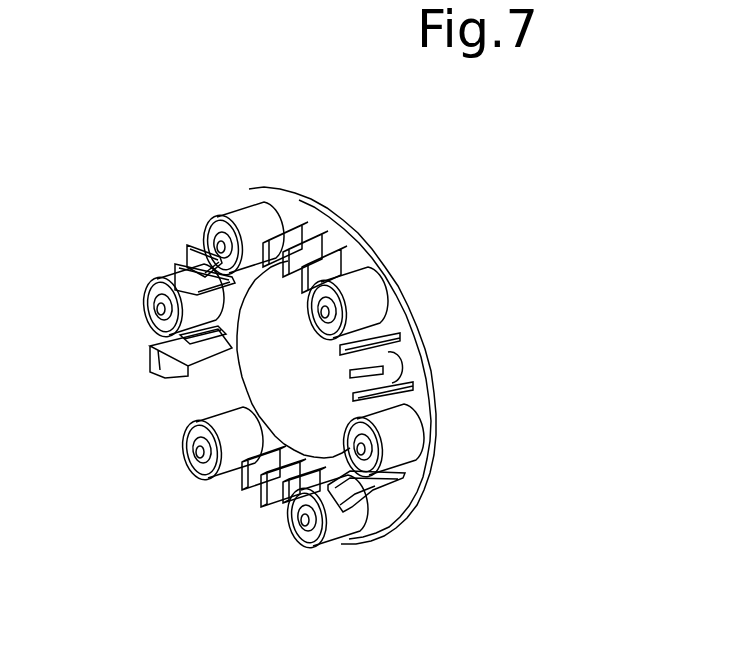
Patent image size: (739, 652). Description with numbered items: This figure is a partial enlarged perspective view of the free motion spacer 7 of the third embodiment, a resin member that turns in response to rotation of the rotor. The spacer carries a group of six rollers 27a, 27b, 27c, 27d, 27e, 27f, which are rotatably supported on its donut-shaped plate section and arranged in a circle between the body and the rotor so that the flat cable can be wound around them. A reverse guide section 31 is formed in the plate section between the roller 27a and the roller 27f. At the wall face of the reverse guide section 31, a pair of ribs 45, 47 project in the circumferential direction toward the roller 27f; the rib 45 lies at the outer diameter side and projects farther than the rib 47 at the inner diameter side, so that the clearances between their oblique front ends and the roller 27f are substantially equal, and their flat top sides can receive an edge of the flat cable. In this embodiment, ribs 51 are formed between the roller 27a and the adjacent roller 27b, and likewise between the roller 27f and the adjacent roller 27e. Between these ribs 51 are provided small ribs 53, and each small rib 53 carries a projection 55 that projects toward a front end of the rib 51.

The free motion spacer 7 is at (353, 228).
The reverse guide section 31 is at (153, 362).
The roller 27a is at (188, 470).
The roller 27b is at (337, 537).
The roller 27c is at (406, 437).
The roller 27d is at (363, 287).
The roller 27e is at (245, 210).
The roller 27f is at (158, 287).
The rib 45 is at (152, 343).
The rib 47 is at (218, 336).
The rib 51 is at (173, 267).
The small rib 53 is at (310, 480).
The projection 55 is at (245, 492).